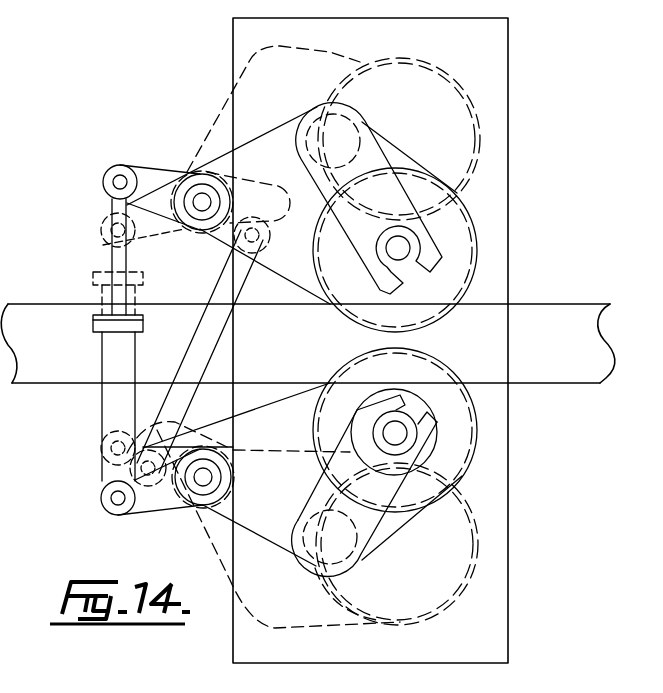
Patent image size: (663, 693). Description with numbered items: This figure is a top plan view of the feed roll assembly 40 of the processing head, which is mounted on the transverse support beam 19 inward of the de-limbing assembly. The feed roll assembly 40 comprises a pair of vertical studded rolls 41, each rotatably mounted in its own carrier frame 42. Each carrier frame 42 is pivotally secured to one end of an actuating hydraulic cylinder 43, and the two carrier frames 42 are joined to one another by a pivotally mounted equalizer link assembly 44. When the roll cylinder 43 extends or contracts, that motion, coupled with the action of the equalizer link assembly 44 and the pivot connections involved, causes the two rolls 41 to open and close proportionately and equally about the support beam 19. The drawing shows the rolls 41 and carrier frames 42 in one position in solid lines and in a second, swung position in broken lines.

The transverse support beam 19 is at (565, 308).
The feed roll assembly 40 is at (527, 206).
The vertical studded rolls 41 is at (478, 252).
The carrier frame 42 is at (287, 265).
The actuating hydraulic cylinder 43 is at (104, 359).
The equalizer link assembly 44 is at (199, 336).